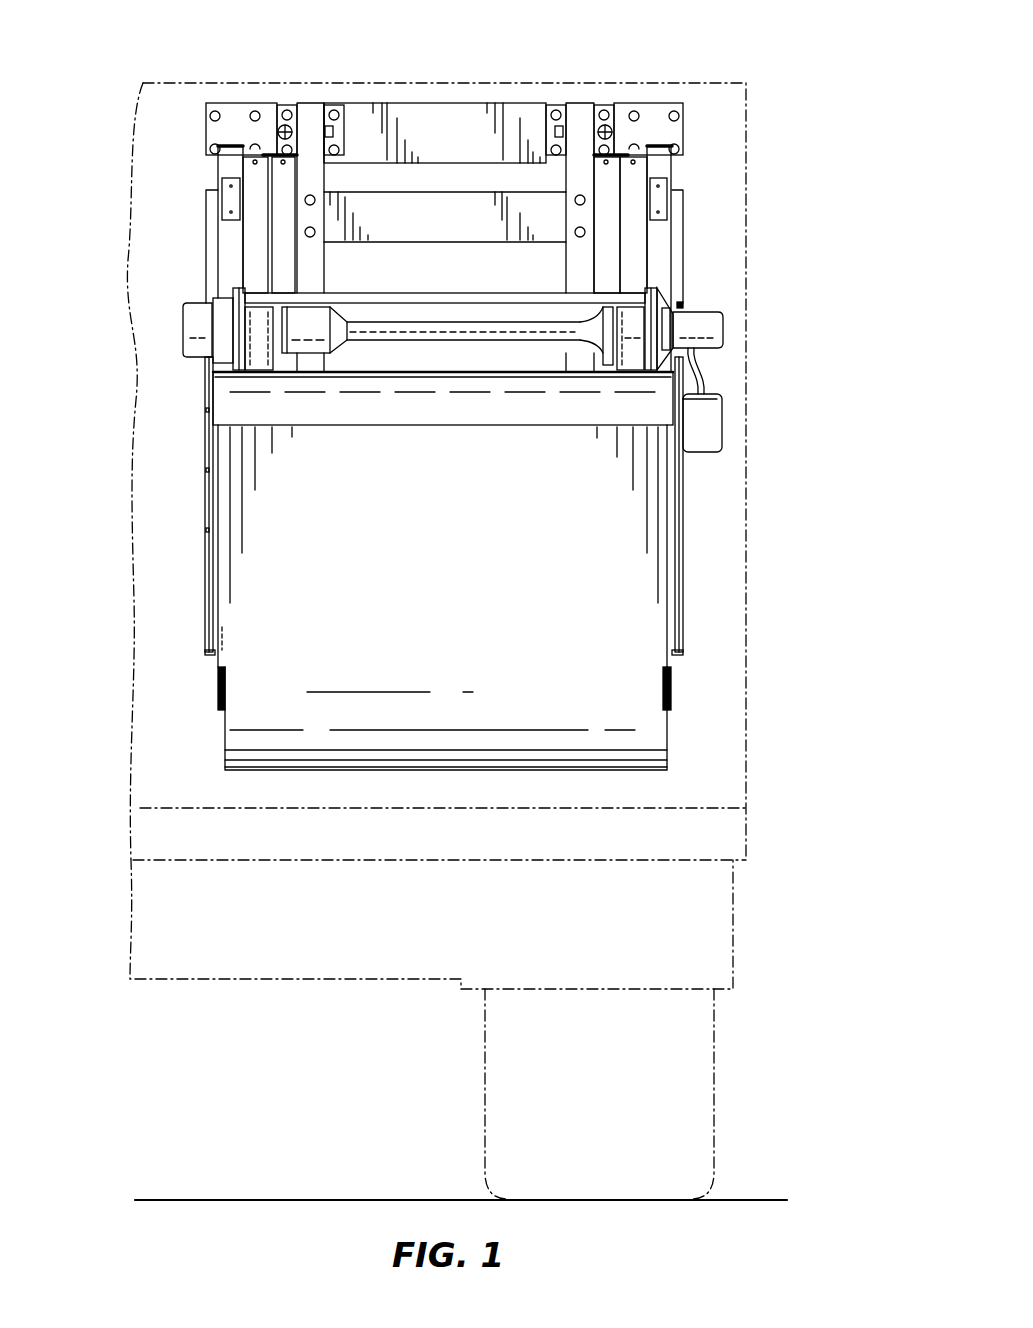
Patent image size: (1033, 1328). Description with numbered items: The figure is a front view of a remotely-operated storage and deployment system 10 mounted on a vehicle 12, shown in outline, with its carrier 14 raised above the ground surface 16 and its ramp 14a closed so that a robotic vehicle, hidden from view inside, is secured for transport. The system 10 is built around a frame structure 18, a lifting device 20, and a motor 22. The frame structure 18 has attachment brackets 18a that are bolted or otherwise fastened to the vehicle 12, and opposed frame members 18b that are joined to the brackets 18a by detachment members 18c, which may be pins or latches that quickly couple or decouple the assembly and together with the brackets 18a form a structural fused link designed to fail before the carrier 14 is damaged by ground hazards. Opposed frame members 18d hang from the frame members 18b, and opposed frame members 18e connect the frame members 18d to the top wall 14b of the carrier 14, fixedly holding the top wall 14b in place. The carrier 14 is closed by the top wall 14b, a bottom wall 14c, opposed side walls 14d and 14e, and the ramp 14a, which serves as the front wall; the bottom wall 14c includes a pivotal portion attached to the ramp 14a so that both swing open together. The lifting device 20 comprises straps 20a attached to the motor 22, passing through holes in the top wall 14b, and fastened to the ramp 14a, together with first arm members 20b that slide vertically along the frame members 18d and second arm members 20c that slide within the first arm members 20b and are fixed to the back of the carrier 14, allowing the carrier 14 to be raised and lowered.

The remotely-operated storage and deployment system 10 is at (725, 497).
The vehicle 12 is at (748, 148).
The carrier 14 is at (682, 732).
The ramp 14a is at (587, 607).
The top wall 14b is at (424, 403).
The bottom wall 14c is at (366, 772).
The side wall 14d is at (215, 572).
The side wall 14e is at (673, 572).
The ground surface 16 is at (358, 1199).
The frame structure 18 is at (267, 70).
The attachment brackets 18a is at (340, 132).
The frame members 18b is at (313, 118).
The detachment members 18c is at (280, 128).
The frame members 18d is at (225, 146).
The frame members 18e is at (206, 400).
The lifting device 20 is at (258, 316).
The straps 20a is at (260, 350).
The first arm members 20b is at (258, 178).
The second arm members 20c is at (283, 208).
The motor 22 is at (195, 338).